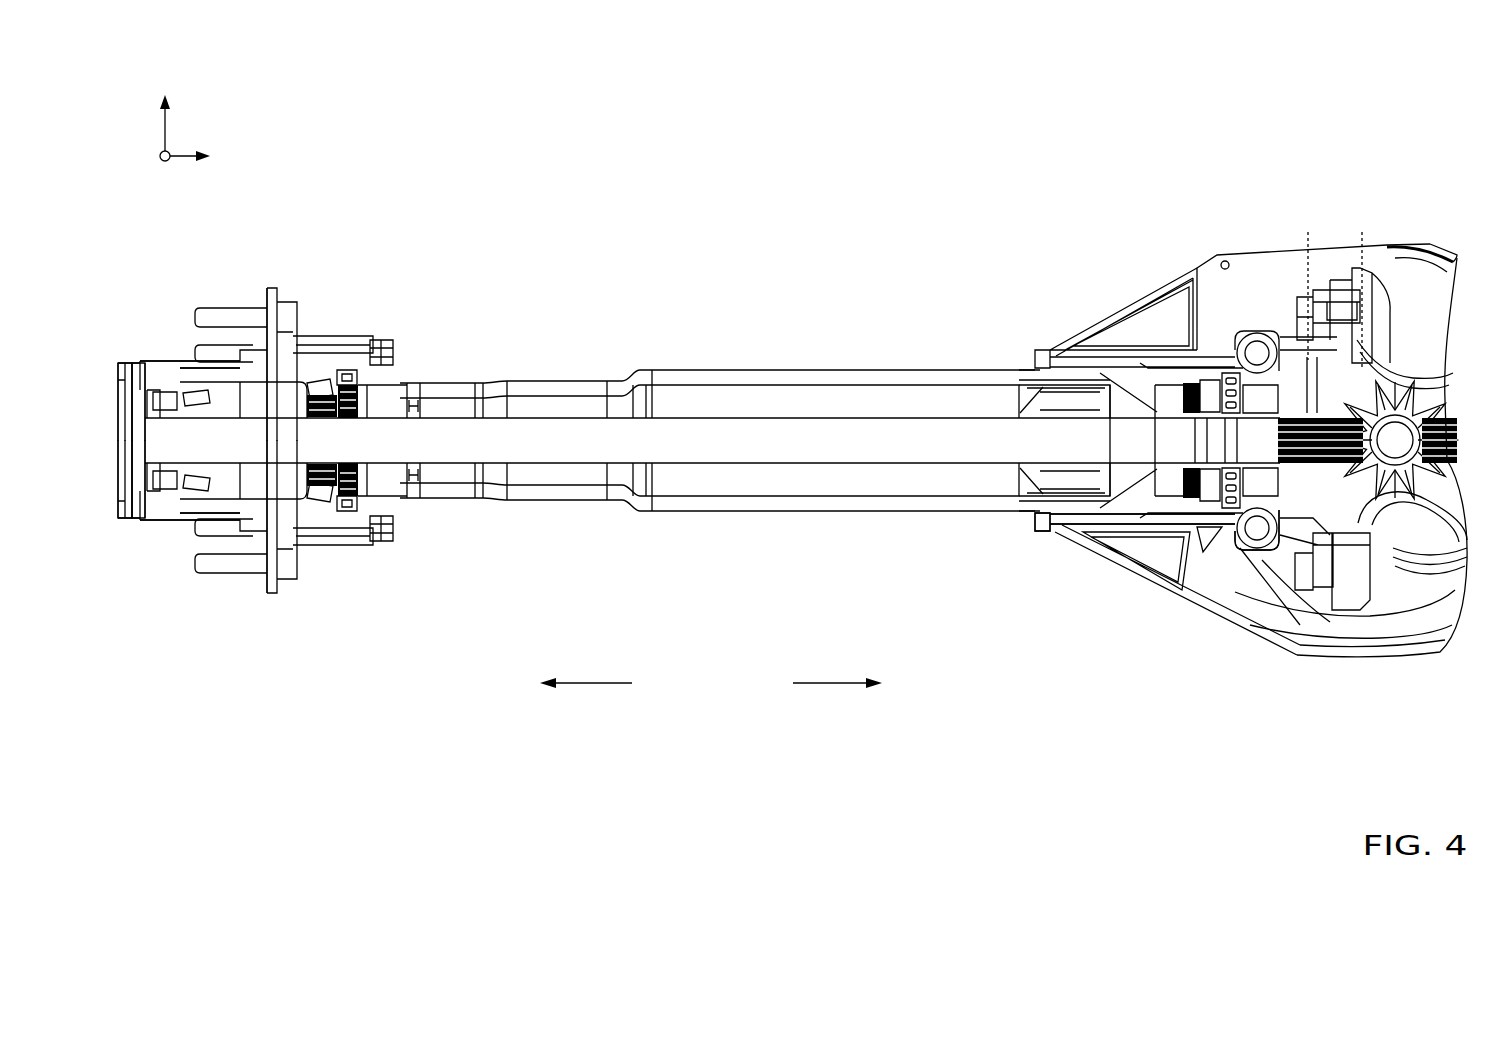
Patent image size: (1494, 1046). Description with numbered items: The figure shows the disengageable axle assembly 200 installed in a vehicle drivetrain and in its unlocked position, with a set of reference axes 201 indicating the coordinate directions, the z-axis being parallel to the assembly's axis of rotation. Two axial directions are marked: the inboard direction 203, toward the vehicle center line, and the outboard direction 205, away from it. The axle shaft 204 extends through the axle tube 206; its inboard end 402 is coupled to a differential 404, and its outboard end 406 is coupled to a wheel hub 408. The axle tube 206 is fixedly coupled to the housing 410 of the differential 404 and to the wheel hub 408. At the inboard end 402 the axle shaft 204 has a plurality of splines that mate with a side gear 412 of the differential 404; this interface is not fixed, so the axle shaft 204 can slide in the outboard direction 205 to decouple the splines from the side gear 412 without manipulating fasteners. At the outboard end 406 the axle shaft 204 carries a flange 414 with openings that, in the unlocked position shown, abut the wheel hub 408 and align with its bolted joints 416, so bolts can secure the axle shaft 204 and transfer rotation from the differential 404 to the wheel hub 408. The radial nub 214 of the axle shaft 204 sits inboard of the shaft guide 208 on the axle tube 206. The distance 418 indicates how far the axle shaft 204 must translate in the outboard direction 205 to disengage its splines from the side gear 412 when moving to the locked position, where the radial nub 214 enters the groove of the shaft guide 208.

The disengageable axle assembly 200 is at (1068, 222).
The set of reference axes 201 is at (205, 122).
The inboard direction 203 is at (830, 690).
The axle shaft 204 is at (463, 425).
The outboard direction 205 is at (597, 690).
The axle tube 206 is at (895, 377).
The shaft guide 208 is at (1022, 388).
The radial nub 214 is at (1107, 493).
The inboard end 402 is at (1341, 515).
The differential 404 is at (1352, 668).
The outboard end 406 is at (157, 522).
The wheel hub 408 is at (185, 365).
The housing 410 is at (1205, 600).
The side gear 412 is at (1240, 372).
The flange 414 is at (138, 393).
The bolted joints 416 is at (135, 500).
The distance 418 is at (1308, 232).